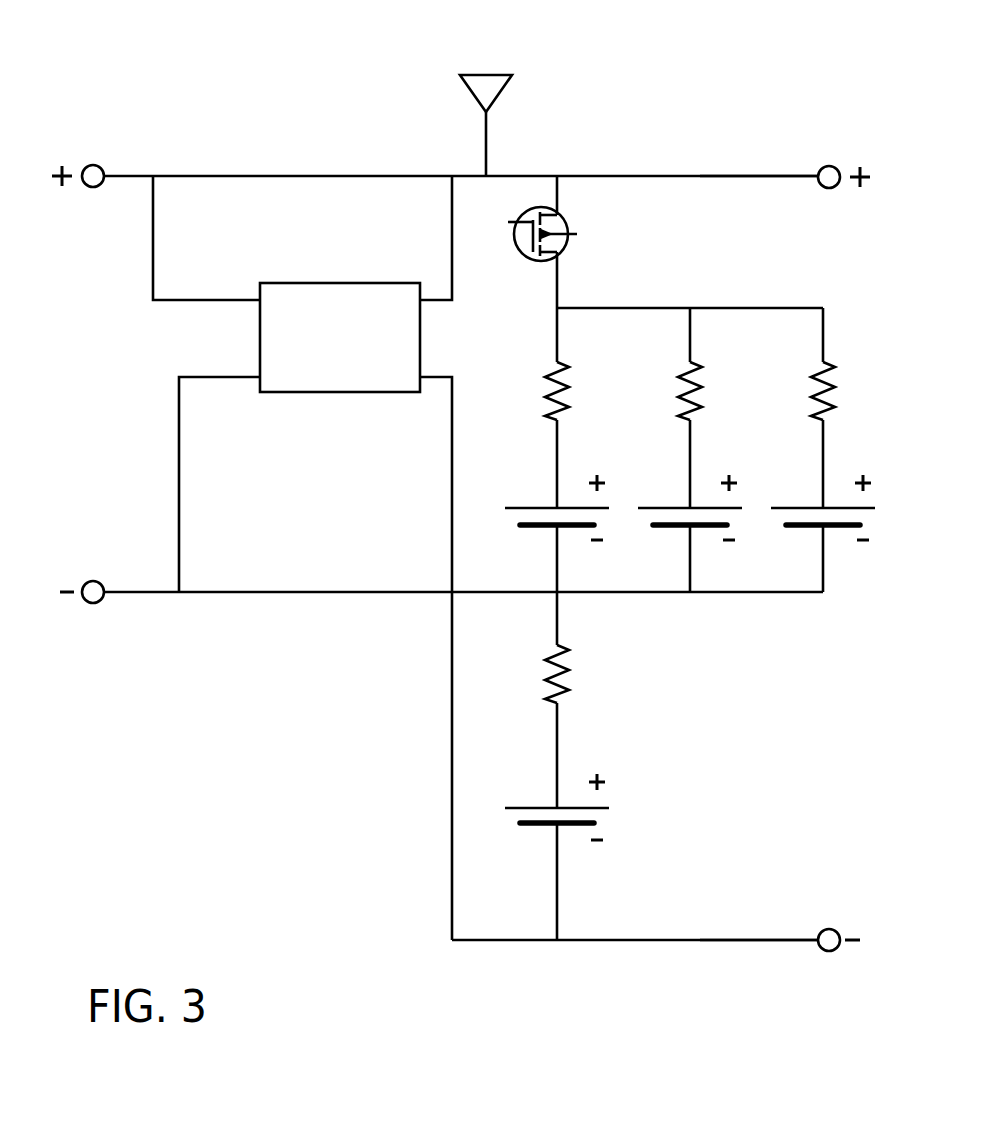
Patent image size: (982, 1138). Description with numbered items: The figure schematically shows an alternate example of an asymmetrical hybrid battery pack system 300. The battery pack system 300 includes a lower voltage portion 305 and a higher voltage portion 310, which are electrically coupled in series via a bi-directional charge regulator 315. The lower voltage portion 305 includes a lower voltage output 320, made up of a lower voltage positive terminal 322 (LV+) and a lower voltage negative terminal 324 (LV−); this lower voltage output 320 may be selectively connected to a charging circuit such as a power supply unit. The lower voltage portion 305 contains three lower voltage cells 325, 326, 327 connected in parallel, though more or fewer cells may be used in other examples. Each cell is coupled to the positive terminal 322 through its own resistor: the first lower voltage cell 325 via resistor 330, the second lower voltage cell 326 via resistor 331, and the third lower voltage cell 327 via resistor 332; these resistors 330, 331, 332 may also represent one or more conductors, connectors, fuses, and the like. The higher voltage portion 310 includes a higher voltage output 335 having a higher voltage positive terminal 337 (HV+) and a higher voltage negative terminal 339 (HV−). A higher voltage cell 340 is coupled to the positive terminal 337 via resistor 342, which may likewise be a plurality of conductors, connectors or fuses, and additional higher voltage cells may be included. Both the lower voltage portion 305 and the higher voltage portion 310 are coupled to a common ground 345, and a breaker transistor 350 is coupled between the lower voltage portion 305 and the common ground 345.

The asymmetrical hybrid battery pack system 300 is at (200, 78).
The lower voltage portion 305 is at (712, 270).
The higher voltage portion 310 is at (696, 685).
The bi-directional charge regulator 315 is at (340, 337).
The lower voltage output 320 is at (64, 660).
The lower voltage positive terminal 322 is at (96, 165).
The lower voltage negative terminal 324 is at (96, 581).
The lower voltage cell 325 is at (530, 545).
The lower voltage cell 326 is at (663, 545).
The lower voltage cell 327 is at (800, 545).
The resistor 330 is at (560, 412).
The resistor 331 is at (693, 412).
The resistor 332 is at (826, 412).
The higher voltage output 335 is at (834, 112).
The higher voltage positive terminal 337 is at (826, 166).
The higher voltage negative terminal 339 is at (826, 929).
The higher voltage cell 340 is at (530, 848).
The resistor 342 is at (560, 696).
The common ground 345 is at (512, 128).
The breaker transistor 350 is at (579, 272).